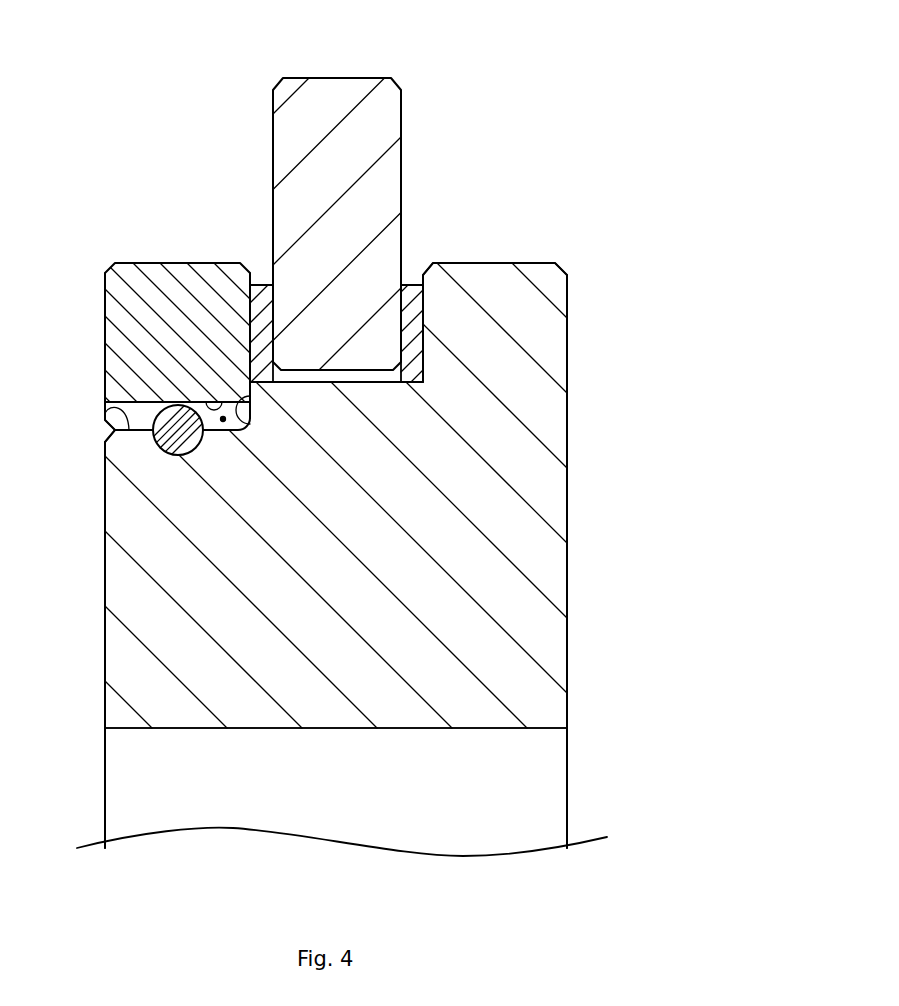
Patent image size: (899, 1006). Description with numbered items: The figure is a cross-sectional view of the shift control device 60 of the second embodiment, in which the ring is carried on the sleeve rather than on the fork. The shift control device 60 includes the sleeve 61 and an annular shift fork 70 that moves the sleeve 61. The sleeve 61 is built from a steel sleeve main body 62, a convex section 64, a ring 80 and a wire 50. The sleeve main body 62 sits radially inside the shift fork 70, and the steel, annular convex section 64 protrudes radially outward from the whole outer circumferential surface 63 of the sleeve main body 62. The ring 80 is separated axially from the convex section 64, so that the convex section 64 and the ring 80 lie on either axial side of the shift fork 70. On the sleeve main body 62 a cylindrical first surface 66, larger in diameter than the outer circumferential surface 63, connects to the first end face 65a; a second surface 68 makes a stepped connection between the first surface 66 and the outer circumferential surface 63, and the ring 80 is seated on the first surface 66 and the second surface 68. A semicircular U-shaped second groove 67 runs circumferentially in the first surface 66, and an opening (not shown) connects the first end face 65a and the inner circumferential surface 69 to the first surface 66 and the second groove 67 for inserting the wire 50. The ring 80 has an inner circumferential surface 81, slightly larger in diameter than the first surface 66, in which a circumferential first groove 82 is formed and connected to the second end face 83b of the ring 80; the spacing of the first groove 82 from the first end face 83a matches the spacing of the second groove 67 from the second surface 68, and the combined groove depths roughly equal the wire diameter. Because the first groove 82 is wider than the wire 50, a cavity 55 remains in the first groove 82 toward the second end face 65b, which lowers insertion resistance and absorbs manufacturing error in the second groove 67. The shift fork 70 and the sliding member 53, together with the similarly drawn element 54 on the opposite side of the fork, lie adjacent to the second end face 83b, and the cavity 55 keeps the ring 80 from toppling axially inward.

The shift control device 60 is at (539, 106).
The sleeve 61 is at (588, 657).
The sleeve main body 62 is at (535, 553).
The convex section 64 is at (522, 326).
The first end face 65a is at (105, 583).
The second end face 65b is at (567, 412).
The inner circumferential surface 69 is at (185, 730).
The outer circumferential surface 63 is at (324, 380).
The sliding member 53 is at (267, 328).
The right bearing bush 54 is at (412, 285).
The shift fork 70 is at (401, 197).
The wire 50 is at (125, 385).
The ring 80 is at (130, 275).
The first end face 83a is at (105, 295).
The second end face 83b is at (262, 292).
The first groove 82 is at (214, 402).
The first surface 66 is at (105, 412).
The second surface 68 is at (252, 430).
The inner circumferential surface 81 is at (125, 436).
The second groove 67 is at (171, 455).
The cavity 55 is at (223, 421).